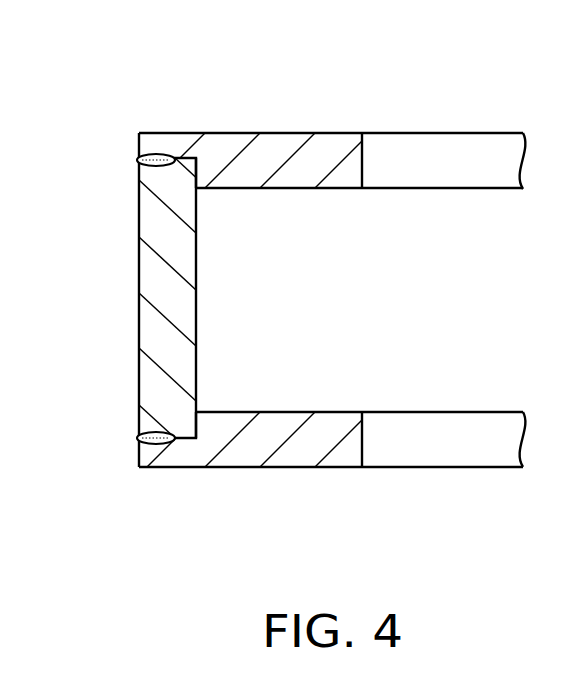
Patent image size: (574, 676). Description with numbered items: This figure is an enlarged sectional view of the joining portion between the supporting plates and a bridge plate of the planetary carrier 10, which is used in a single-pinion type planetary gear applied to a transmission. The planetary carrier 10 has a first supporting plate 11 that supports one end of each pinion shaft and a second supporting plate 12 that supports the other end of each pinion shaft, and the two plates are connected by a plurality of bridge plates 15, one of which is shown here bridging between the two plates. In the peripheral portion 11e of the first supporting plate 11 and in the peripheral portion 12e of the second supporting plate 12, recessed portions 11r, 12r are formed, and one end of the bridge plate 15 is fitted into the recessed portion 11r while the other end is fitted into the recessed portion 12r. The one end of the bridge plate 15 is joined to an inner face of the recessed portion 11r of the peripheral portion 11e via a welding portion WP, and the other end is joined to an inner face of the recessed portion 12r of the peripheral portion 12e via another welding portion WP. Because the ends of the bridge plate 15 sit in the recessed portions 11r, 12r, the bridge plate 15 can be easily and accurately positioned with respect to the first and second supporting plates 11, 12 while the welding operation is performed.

The planetary carrier 10 is at (102, 111).
The first supporting plate 11 is at (328, 150).
The peripheral portion 11e is at (168, 150).
The recessed portion 11r is at (197, 166).
The second supporting plate 12 is at (330, 452).
The peripheral portion 12e is at (172, 450).
The recessed portion 12r is at (203, 437).
The bridge plate 15 is at (153, 288).
The welding portion WP is at (136, 162).